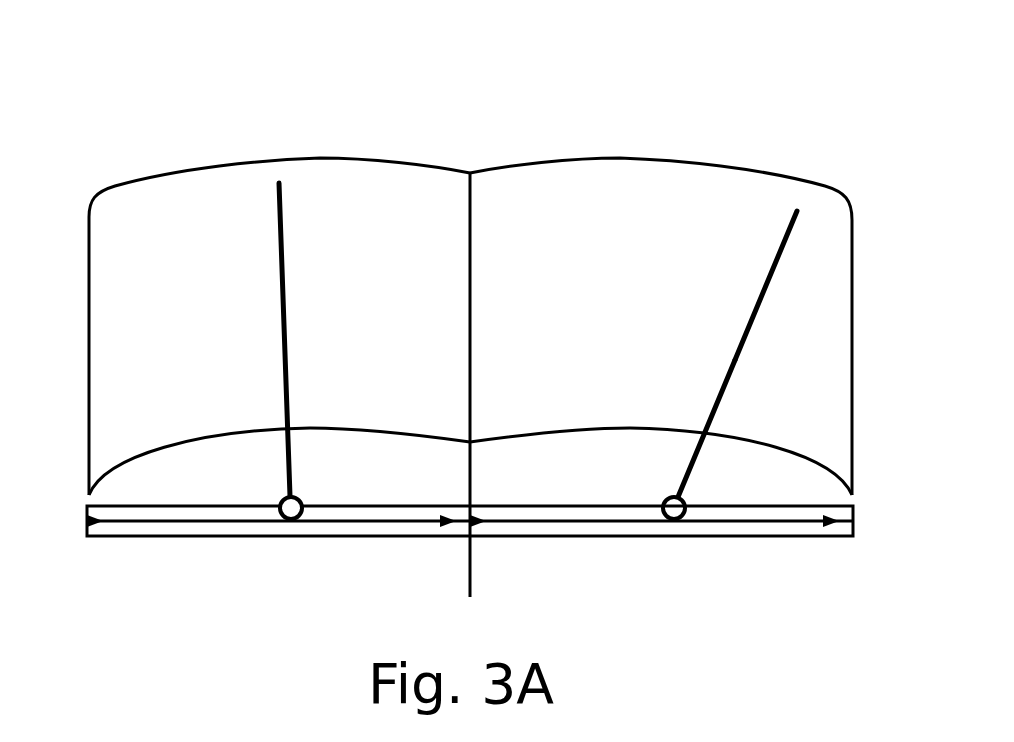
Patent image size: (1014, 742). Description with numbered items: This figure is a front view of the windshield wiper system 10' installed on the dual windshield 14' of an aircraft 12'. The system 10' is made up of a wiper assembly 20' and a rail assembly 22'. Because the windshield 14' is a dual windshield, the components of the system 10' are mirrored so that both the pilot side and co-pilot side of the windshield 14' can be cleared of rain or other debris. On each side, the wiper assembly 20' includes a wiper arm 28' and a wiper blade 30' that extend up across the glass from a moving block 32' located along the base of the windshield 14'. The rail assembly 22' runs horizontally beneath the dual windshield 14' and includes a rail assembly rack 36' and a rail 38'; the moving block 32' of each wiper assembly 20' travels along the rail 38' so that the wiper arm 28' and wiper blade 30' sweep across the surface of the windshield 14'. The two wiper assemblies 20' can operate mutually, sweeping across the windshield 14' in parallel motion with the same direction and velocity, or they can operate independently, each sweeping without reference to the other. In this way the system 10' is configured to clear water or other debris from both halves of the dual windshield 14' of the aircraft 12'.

The system 10' is at (724, 599).
The aircraft 12' is at (448, 222).
The dual windshield 14' is at (279, 279).
The wiper assembly 20' is at (661, 340).
The rail assembly 22' is at (465, 575).
The wiper arm 28' is at (800, 409).
The wiper blade 30' is at (728, 219).
The moving block 32' is at (271, 552).
The rail assembly rack 36' is at (269, 422).
The rail 38' is at (653, 567).